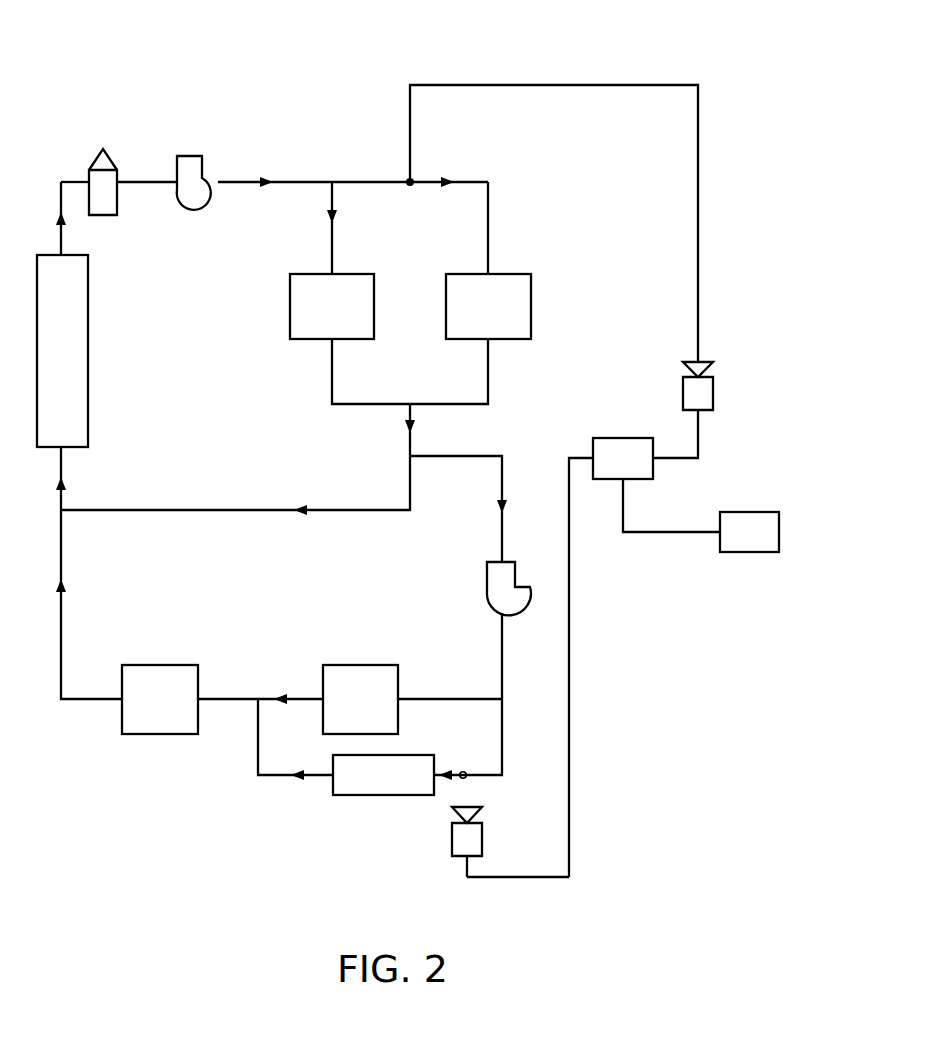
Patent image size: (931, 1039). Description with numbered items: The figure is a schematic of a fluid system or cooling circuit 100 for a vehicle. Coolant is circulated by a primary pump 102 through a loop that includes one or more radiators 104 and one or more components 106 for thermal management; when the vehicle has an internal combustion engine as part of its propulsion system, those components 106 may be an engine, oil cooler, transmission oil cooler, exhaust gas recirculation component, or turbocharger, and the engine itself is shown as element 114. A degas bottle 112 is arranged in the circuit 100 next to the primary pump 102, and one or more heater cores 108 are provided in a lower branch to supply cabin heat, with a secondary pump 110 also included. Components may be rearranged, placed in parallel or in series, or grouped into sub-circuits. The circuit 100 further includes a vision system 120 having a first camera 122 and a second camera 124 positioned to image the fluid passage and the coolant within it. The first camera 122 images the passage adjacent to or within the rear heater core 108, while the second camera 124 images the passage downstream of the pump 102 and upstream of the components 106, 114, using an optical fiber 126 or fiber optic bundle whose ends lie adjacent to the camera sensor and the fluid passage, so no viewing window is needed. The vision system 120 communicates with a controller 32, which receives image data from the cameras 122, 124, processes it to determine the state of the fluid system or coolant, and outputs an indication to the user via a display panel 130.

The fluid circuit 100 is at (610, 775).
The primary pump 102 is at (190, 155).
The radiator 104 is at (88, 352).
The component for thermal management 106 is at (290, 307).
The heater core 108 is at (360, 665).
The secondary pump 110 is at (515, 570).
The degas bottle 112 is at (103, 148).
The internal combustion engine 114 is at (533, 308).
The vision system 120 is at (593, 635).
The first camera 122 is at (482, 838).
The second camera 124 is at (713, 392).
The optical fiber 126 is at (555, 85).
The display panel 130 is at (779, 535).
The controller 32 is at (627, 438).